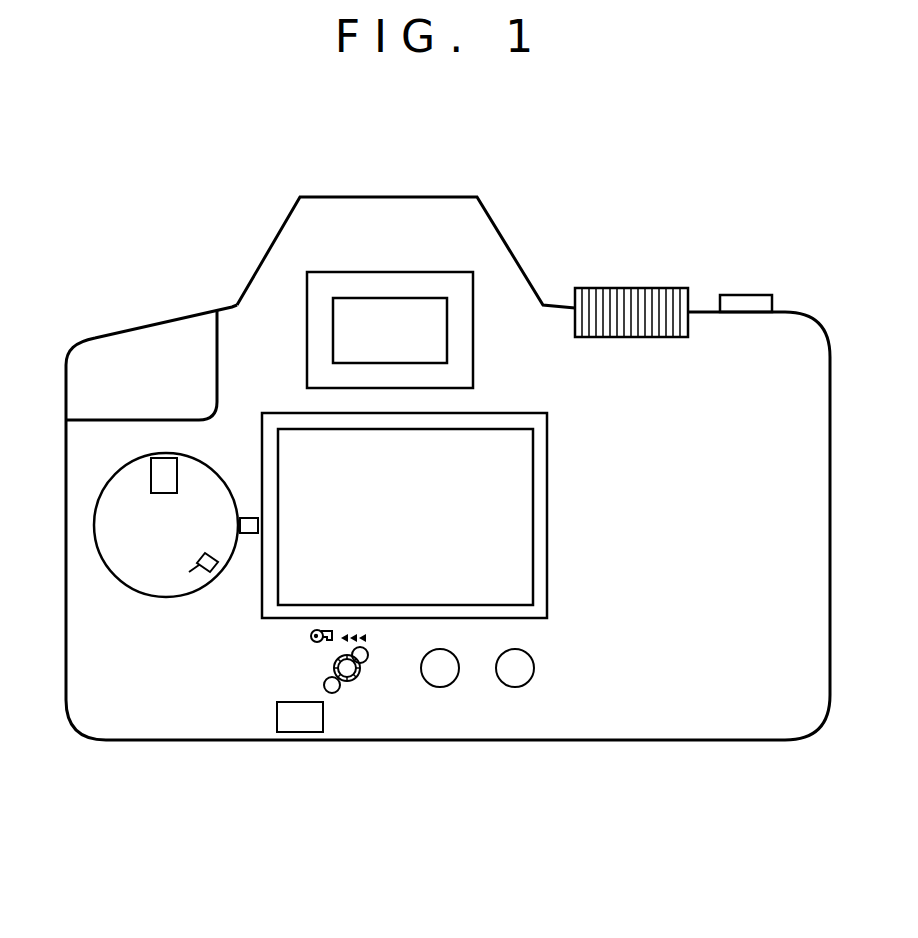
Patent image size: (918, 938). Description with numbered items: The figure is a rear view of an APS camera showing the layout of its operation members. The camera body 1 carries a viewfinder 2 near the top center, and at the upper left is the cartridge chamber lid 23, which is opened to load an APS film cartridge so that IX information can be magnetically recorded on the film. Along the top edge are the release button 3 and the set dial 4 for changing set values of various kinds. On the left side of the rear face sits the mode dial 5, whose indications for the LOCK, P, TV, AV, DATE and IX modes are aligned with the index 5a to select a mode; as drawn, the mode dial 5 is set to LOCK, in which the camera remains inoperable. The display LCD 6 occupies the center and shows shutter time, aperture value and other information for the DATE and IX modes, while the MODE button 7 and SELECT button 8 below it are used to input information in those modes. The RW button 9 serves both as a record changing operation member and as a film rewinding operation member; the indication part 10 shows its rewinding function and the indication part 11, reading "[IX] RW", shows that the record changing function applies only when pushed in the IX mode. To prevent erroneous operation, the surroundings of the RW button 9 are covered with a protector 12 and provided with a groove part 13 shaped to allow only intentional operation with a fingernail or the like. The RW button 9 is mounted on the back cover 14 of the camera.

The camera body 1 is at (442, 197).
The viewfinder 2 is at (447, 325).
The release button 3 is at (745, 296).
The set dial 4 is at (655, 288).
The mode dial 5 is at (100, 492).
The index 5a is at (250, 518).
The display LCD 6 is at (533, 470).
The MODE button 7 is at (440, 687).
The SELECT button 8 is at (515, 687).
The RW button 9 is at (352, 680).
The indication part 10 is at (308, 636).
The indication part 11 is at (344, 735).
The protector 12 is at (334, 662).
The groove part 13 is at (366, 656).
The back cover 14 is at (87, 647).
The cartridge chamber lid 23 is at (132, 330).